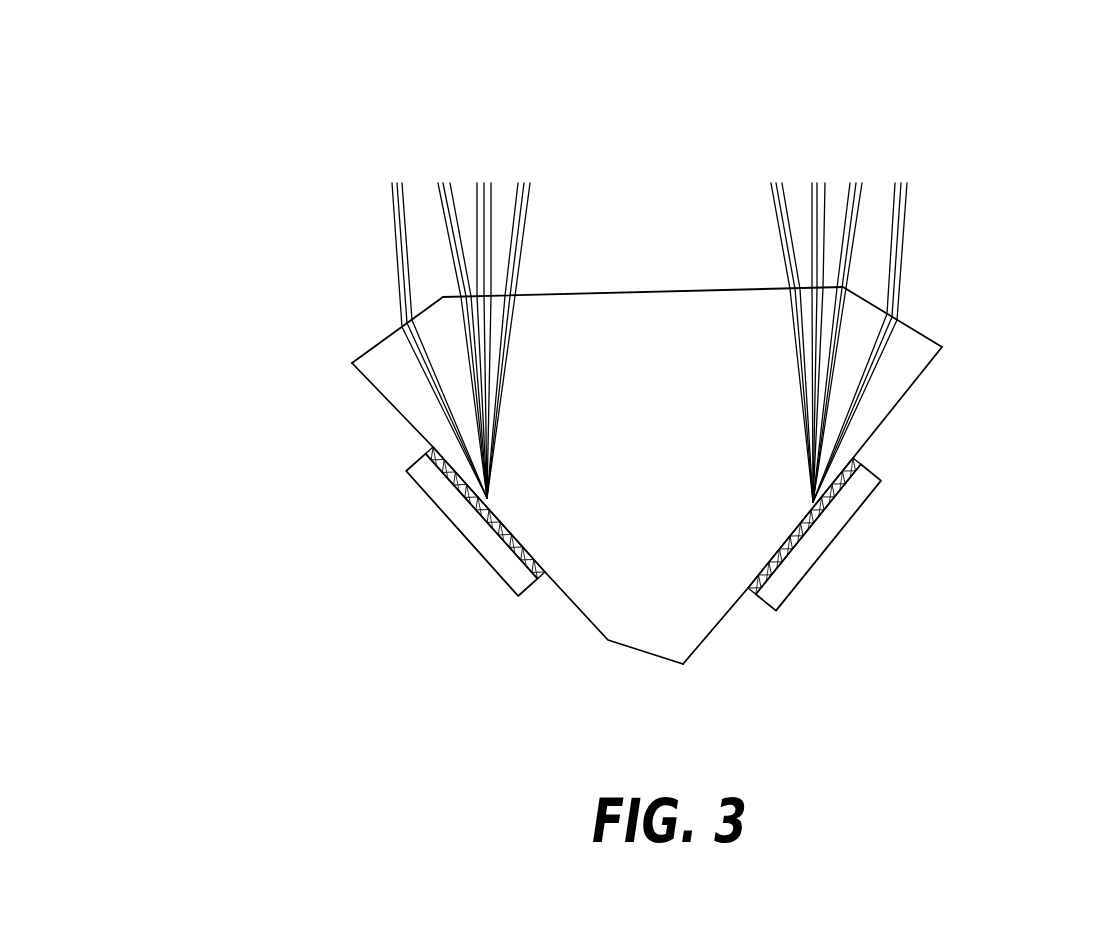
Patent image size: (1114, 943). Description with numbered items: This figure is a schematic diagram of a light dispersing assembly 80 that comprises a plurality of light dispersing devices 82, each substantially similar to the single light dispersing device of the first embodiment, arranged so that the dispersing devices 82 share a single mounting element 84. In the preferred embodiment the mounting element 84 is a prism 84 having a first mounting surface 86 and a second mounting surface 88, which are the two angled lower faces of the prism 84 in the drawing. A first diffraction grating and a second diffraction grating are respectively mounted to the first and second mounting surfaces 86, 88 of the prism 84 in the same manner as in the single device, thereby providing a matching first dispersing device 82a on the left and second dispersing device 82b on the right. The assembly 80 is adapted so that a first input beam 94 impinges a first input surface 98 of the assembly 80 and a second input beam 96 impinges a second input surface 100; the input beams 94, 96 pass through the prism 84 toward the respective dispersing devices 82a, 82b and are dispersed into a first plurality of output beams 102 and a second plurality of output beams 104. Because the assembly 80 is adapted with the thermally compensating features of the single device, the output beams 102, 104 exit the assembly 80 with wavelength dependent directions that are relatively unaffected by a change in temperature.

The light dispersing assembly 80 is at (207, 172).
The light dispersing devices 82 is at (659, 567).
The first dispersing device 82a is at (432, 568).
The second dispersing device 82b is at (867, 583).
The mounting element 84 is at (608, 293).
The first mounting surface 86 is at (407, 423).
The second mounting surface 88 is at (898, 400).
The first input beam 94 is at (395, 237).
The second input beam 96 is at (907, 225).
The first input surface 98 is at (372, 348).
The second input surface 100 is at (920, 328).
The first plurality of output beams 102 is at (507, 157).
The second plurality of output beams 104 is at (850, 157).